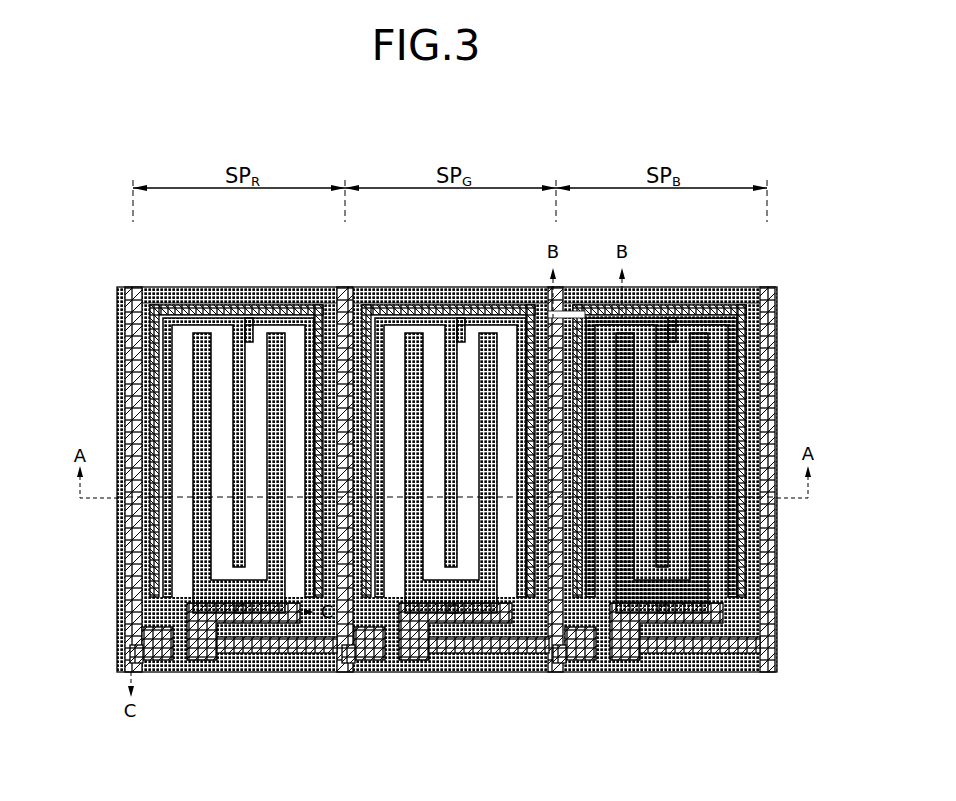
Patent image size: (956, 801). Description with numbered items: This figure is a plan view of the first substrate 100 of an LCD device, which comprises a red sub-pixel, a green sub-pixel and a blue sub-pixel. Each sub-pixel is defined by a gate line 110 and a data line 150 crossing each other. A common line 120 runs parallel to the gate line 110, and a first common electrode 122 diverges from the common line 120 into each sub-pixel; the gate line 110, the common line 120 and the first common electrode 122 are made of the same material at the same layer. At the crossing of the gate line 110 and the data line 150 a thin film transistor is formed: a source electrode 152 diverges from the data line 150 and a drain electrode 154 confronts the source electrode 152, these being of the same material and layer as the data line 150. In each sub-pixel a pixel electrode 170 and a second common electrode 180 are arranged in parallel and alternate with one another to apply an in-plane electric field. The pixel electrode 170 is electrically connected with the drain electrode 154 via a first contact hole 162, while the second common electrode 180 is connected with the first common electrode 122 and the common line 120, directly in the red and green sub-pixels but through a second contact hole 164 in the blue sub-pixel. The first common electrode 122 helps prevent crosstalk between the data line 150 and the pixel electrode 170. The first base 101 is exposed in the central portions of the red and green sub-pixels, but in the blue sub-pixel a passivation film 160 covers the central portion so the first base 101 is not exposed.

The first substrate 100 is at (801, 240).
The first base 101 is at (180, 415).
The gate line 110 is at (305, 648).
The common line 120 is at (366, 300).
The first common electrode 122 is at (146, 316).
The data line 150 is at (155, 598).
The source electrode 152 is at (155, 660).
The drain electrode 154 is at (210, 655).
The passivation film 160 is at (150, 617).
The first contact hole 162 is at (243, 615).
The second contact hole 164 is at (582, 316).
The pixel electrode 170 is at (202, 373).
The second common electrode 180 is at (245, 342).